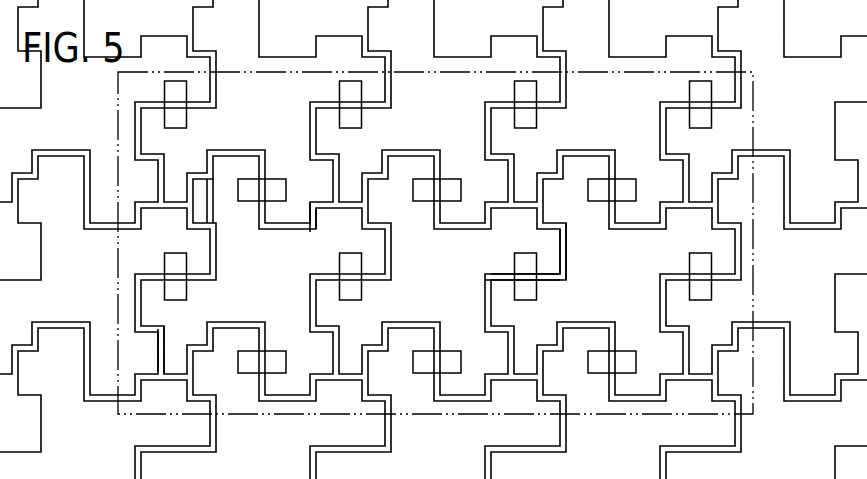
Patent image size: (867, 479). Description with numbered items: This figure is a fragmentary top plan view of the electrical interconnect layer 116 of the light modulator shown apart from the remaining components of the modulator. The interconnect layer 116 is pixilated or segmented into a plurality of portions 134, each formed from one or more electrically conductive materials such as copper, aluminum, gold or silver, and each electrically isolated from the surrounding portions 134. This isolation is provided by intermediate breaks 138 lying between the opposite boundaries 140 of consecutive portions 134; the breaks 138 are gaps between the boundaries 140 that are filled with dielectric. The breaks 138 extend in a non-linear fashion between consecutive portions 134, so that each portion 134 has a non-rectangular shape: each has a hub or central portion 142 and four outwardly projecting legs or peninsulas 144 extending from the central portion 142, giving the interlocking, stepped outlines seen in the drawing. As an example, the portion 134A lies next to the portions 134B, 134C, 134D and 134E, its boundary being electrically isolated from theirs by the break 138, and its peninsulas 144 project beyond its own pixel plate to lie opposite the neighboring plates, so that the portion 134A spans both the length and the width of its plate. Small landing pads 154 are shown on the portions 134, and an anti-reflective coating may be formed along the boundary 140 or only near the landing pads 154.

The electrical interconnect layer 116 is at (677, 72).
The portion 134 is at (248, 87).
The portion 134A is at (468, 294).
The portion 134B is at (283, 293).
The portion 134C is at (465, 95).
The portion 134D is at (640, 291).
The portion 134E is at (518, 408).
The break 138 is at (548, 282).
The boundary 140 is at (587, 230).
The central portion 142 is at (232, 252).
The peninsula 144 is at (337, 222).
The landing pad 154 is at (338, 292).